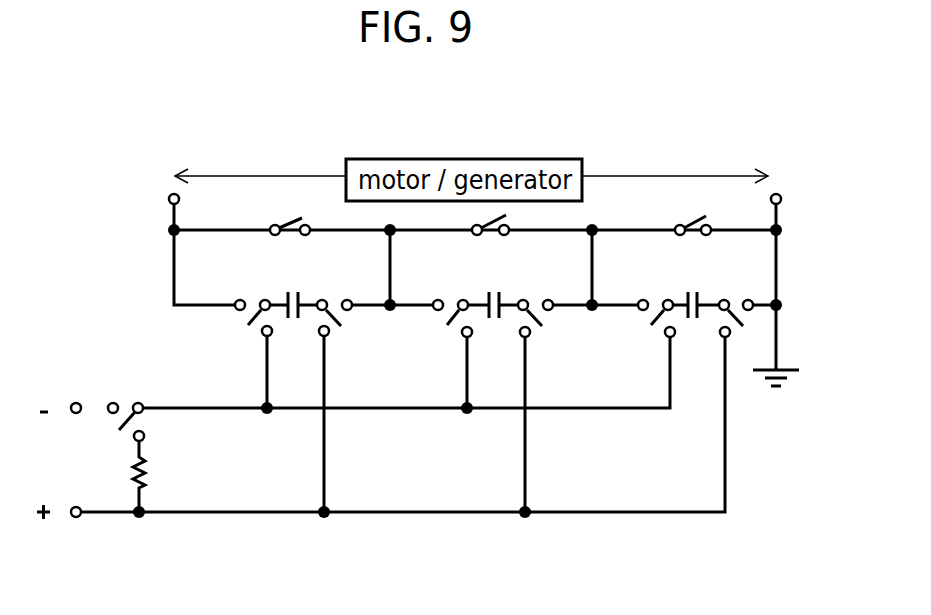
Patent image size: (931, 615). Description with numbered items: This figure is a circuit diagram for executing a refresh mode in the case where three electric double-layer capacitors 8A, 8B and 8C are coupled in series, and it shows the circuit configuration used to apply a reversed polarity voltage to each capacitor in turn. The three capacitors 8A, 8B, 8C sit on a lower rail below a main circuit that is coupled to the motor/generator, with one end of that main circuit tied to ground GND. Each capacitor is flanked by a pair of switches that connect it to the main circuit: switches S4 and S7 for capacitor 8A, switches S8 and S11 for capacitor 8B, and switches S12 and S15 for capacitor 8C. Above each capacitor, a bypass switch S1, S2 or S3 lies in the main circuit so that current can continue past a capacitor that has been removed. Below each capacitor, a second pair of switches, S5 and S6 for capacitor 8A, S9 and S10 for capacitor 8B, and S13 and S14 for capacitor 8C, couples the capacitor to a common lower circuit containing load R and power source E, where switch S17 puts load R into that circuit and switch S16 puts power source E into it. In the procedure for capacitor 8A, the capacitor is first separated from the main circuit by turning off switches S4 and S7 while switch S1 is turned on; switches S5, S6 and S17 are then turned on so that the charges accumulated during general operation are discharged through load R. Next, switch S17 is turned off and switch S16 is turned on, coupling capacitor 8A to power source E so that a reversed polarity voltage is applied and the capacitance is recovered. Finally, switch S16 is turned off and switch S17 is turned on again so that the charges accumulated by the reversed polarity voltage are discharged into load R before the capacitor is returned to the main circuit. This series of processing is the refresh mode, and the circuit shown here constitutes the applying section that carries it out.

The switch S1 is at (283, 218).
The switch S2 is at (473, 220).
The switch S3 is at (677, 222).
The switch S4 is at (252, 297).
The switch S5 is at (258, 340).
The switch S6 is at (333, 343).
The switch S7 is at (340, 297).
The switch S8 is at (448, 293).
The switch S9 is at (457, 343).
The switch S10 is at (533, 343).
The switch S11 is at (537, 297).
The switch S12 is at (652, 297).
The switch S13 is at (662, 338).
The switch S14 is at (730, 338).
The switch S15 is at (737, 297).
The switch S16 is at (117, 400).
The switch S17 is at (145, 438).
The capacitor 8A is at (298, 325).
The capacitor 8B is at (497, 325).
The capacitor 8C is at (697, 328).
The load R is at (124, 476).
The power source E is at (29, 462).
The ground GND is at (833, 383).